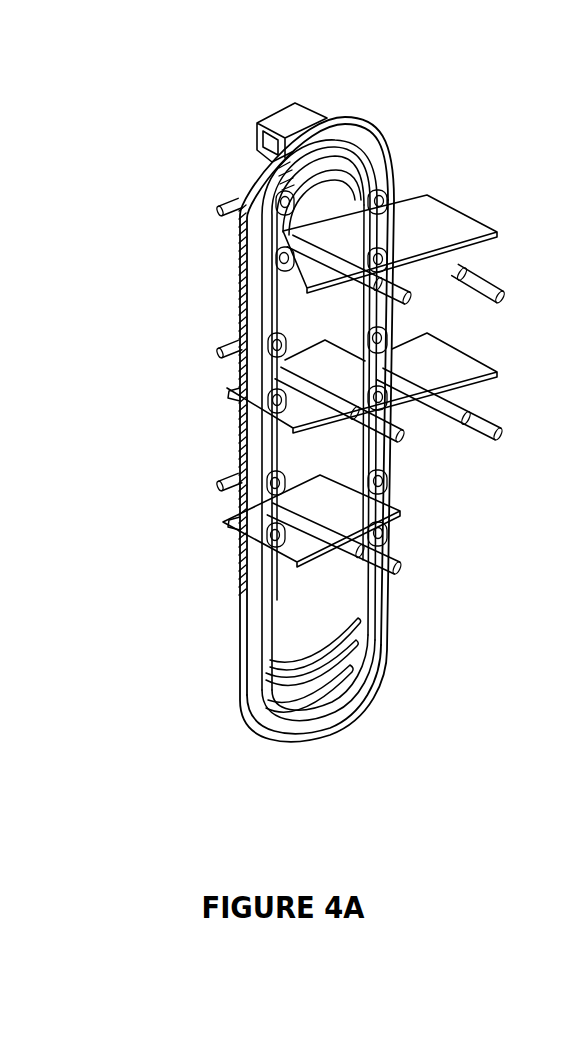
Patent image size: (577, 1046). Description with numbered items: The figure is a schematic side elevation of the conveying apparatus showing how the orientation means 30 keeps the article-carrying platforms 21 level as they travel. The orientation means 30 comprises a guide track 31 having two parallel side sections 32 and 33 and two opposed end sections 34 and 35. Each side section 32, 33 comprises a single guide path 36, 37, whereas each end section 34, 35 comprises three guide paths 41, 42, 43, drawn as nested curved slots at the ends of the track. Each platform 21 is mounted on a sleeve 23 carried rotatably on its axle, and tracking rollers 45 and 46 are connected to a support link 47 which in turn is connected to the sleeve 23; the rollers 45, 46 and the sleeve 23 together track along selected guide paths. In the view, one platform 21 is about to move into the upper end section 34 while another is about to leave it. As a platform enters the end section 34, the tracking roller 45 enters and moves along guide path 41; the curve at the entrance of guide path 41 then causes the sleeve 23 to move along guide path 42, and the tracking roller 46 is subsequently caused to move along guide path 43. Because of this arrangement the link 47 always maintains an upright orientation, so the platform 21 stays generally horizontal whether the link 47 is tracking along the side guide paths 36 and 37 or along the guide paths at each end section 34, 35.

The platform 21 is at (437, 352).
The sleeve 23 is at (350, 417).
The orientation means 30 is at (388, 648).
The guide track 31 is at (377, 607).
The side section 32 is at (242, 440).
The side section 33 is at (397, 463).
The end section 34 is at (345, 118).
The end section 35 is at (273, 748).
The guide path 36 is at (247, 283).
The guide path 37 is at (383, 305).
The guide path 41 is at (333, 707).
The guide path 42 is at (335, 698).
The guide path 43 is at (345, 650).
The tracking roller 45 is at (217, 347).
The tracking roller 46 is at (240, 413).
The support link 47 is at (247, 367).